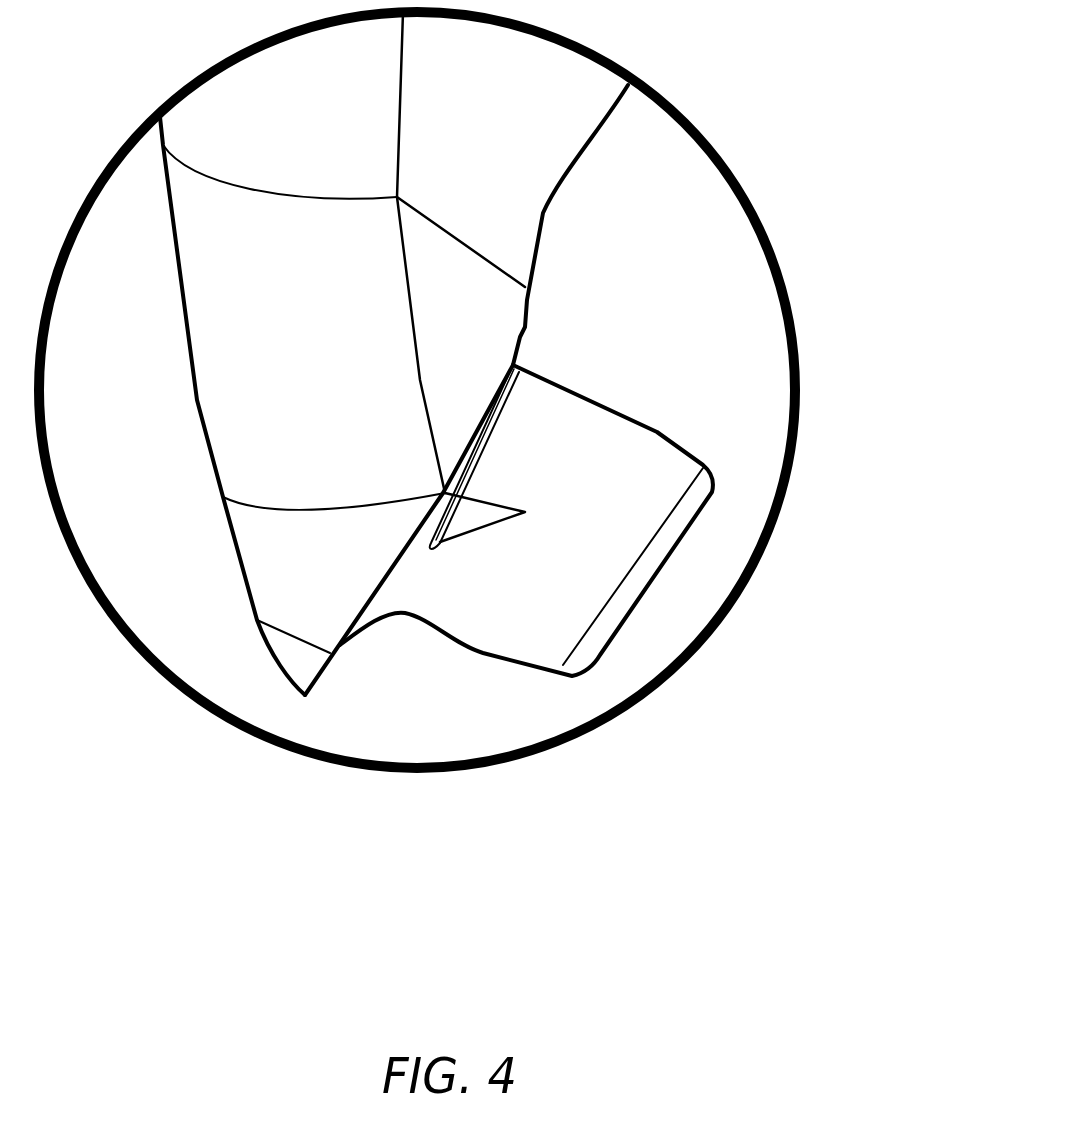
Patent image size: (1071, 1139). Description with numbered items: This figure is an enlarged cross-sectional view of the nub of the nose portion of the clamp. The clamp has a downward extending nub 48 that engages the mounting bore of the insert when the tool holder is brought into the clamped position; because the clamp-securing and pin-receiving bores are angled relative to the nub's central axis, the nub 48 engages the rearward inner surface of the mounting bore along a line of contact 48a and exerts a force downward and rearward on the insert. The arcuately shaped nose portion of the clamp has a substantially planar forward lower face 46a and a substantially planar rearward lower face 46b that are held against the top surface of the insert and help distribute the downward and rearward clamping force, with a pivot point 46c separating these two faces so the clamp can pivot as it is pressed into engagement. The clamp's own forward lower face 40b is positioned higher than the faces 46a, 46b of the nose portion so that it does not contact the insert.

The forward lower face 40b is at (605, 126).
The nub 48 is at (688, 223).
The line of contact 48a is at (640, 422).
The forward lower face 46a is at (405, 567).
The rearward lower face 46b is at (483, 435).
The pivot point 46c is at (447, 497).